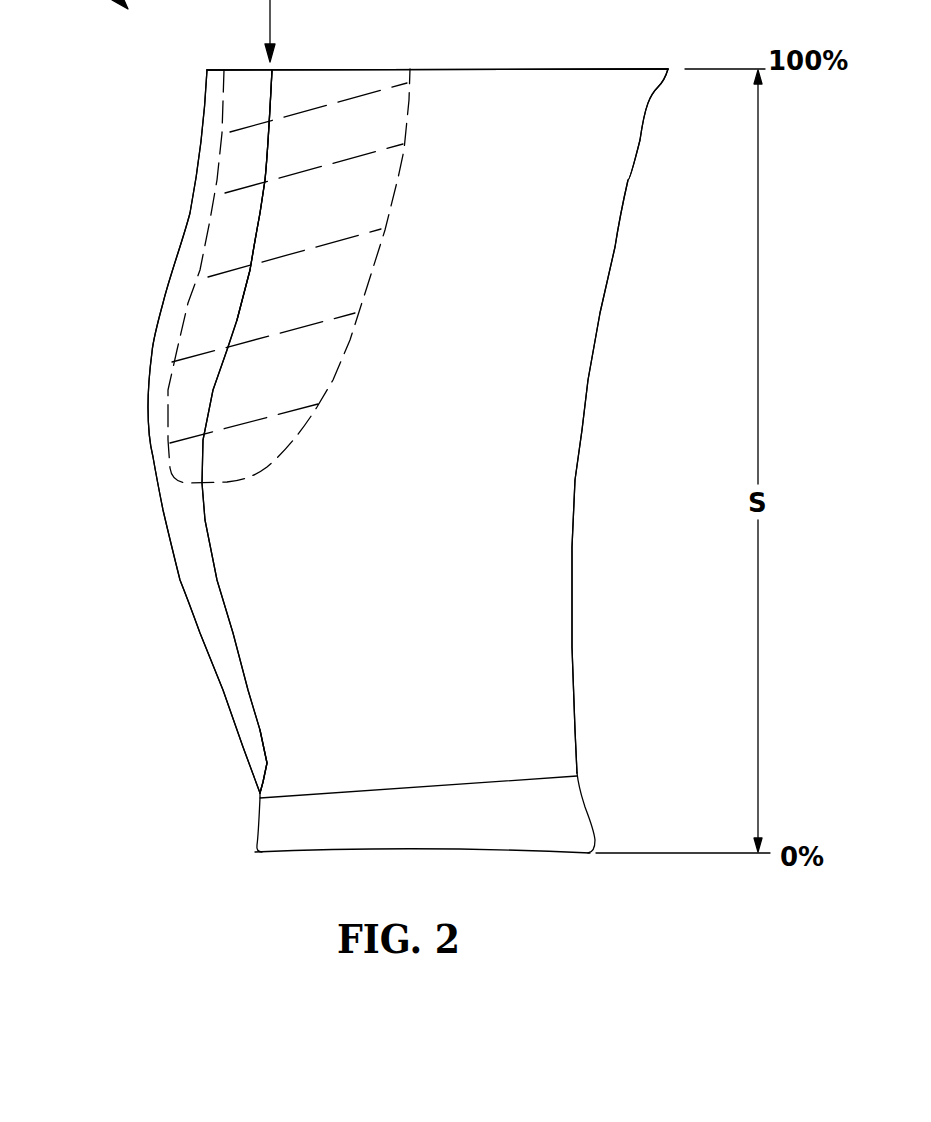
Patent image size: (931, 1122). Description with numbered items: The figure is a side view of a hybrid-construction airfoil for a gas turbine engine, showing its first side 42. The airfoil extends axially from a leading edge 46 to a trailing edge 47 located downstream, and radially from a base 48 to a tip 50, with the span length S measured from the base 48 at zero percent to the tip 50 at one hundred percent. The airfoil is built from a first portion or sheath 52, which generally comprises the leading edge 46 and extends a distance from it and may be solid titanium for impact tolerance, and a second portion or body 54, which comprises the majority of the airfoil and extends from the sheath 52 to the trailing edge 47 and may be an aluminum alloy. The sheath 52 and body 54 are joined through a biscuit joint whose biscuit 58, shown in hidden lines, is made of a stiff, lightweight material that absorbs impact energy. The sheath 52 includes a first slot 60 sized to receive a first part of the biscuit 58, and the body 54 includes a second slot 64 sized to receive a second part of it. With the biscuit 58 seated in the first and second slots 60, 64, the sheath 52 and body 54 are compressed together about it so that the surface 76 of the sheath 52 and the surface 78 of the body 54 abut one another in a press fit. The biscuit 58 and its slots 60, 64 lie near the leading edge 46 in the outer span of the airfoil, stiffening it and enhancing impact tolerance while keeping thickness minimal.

The first side 42 is at (500, 570).
The leading edge 46 is at (160, 498).
The trailing edge 47 is at (587, 412).
The base 48 is at (252, 852).
The tip 50 is at (207, 70).
The sheath 52 is at (215, 628).
The body 54 is at (522, 287).
The biscuit 58 is at (333, 93).
The first slot 60 is at (213, 303).
The second slot 64 is at (343, 263).
The surface of the sheath 76 is at (256, 663).
The surface of the body 78 is at (200, 582).